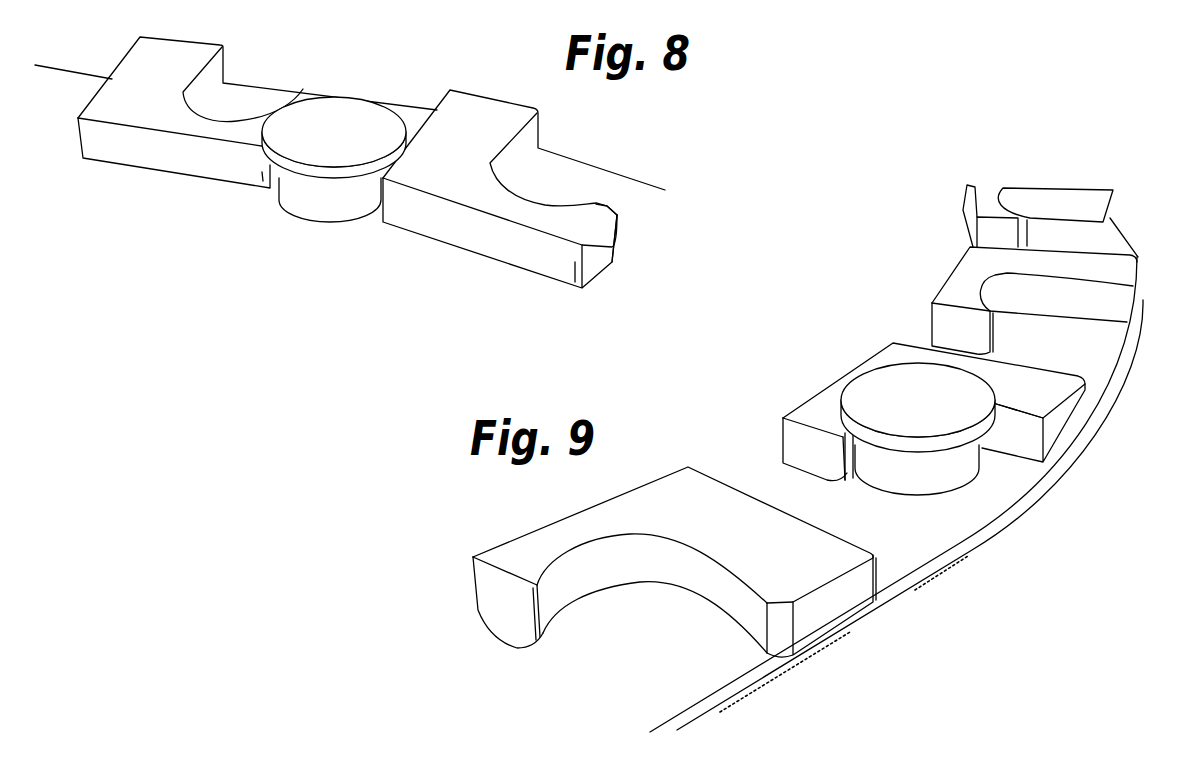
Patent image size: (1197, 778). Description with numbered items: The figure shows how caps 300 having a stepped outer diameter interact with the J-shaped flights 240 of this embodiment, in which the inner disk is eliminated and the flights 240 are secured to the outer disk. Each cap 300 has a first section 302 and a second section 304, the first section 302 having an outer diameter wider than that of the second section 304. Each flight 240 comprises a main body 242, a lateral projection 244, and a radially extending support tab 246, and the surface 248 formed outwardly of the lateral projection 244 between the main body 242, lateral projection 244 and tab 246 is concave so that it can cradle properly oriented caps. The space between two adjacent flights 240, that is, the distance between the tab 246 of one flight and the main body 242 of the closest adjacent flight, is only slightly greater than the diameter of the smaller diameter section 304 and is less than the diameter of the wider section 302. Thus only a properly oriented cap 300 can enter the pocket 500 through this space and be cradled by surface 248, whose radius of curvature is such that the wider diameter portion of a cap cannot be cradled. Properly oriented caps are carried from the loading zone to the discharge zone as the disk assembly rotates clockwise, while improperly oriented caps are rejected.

In FIG. 8, the flight 240 is at (395, 184).
In FIG. 9, the flight 240 is at (679, 464).
In FIG. 8, the main body 242 is at (371, 142).
In FIG. 9, the main body 242 is at (779, 473).
In FIG. 8, the lateral projection 244 is at (213, 155).
In FIG. 9, the lateral projection 244 is at (525, 553).
In FIG. 8, the radially extending support tab 246 is at (607, 212).
In FIG. 9, the radially extending support tab 246 is at (530, 621).
In FIG. 8, the concave surface 248 is at (221, 109).
In FIG. 9, the concave surface 248 is at (614, 575).
In FIG. 8, the cap 300 is at (344, 156).
In FIG. 9, the cap 300 is at (929, 462).
In FIG. 8, the first section 302 is at (334, 137).
In FIG. 9, the first section 302 is at (918, 407).
In FIG. 8, the second section 304 is at (295, 195).
In FIG. 9, the second section 304 is at (912, 470).
In FIG. 9, the pocket 500 is at (896, 458).